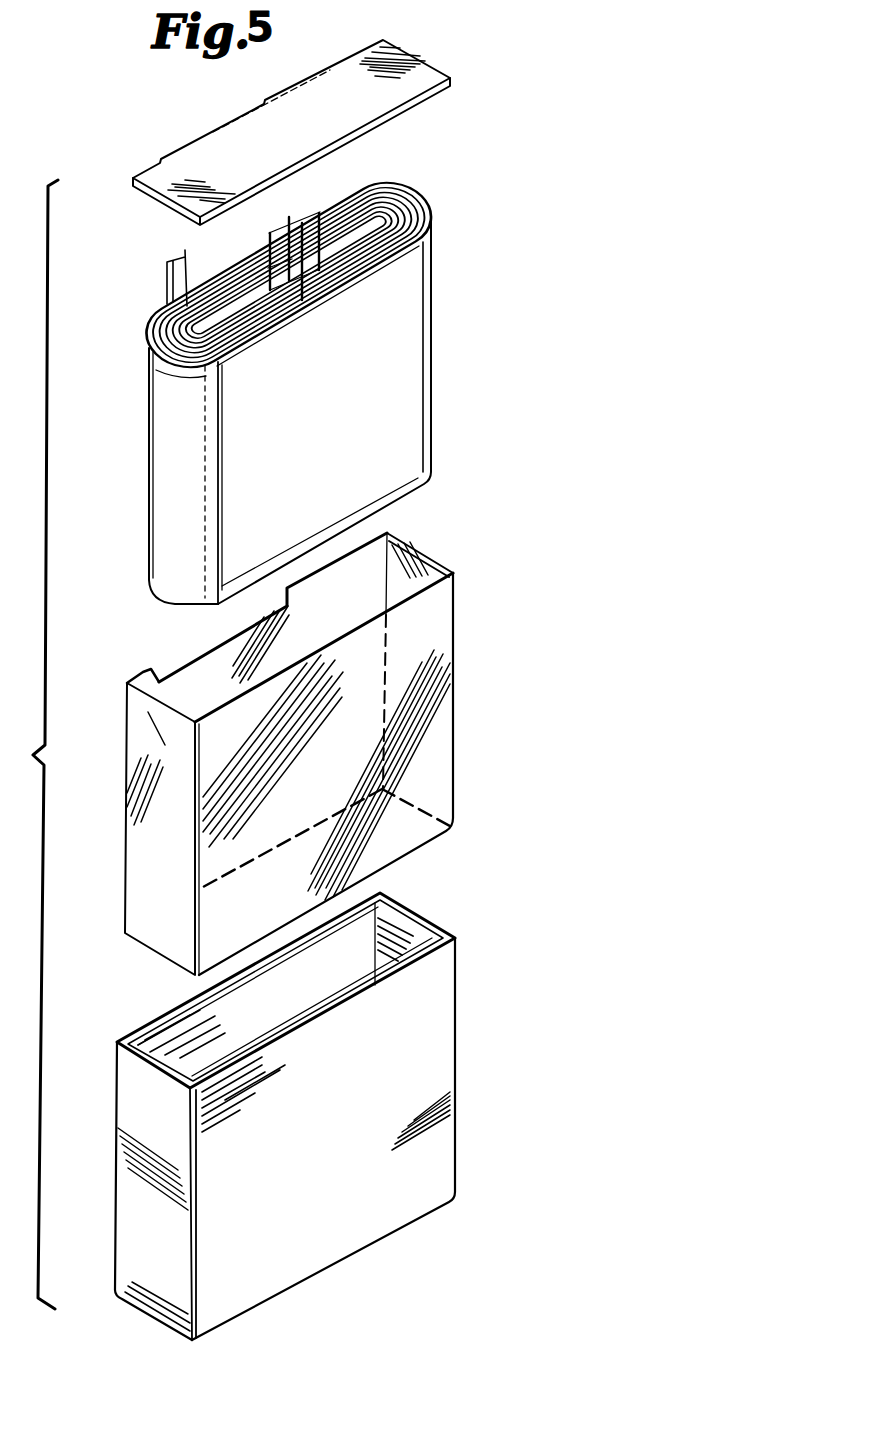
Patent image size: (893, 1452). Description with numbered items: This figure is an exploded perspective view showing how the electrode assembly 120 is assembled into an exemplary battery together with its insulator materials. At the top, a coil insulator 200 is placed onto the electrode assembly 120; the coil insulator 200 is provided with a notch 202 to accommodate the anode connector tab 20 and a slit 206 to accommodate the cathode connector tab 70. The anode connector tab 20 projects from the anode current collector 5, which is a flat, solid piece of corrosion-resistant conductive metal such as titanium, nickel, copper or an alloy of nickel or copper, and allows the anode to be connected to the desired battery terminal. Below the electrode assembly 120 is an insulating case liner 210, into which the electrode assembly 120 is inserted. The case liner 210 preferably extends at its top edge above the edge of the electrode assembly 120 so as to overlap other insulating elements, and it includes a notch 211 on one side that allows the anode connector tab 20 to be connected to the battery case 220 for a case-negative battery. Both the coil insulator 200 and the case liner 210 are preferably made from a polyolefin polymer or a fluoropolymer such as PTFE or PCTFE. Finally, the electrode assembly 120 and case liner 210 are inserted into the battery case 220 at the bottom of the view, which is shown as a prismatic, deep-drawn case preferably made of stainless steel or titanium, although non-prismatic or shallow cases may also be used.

The coil insulator 200 is at (291, 661).
The notch 202 is at (291, 112).
The slit 206 is at (377, 95).
The electrode assembly 120 is at (331, 387).
The anode current collector 5 is at (363, 434).
The anode connector tab 20 is at (186, 256).
The cathode connector tab 70 is at (276, 241).
The case liner 210 is at (321, 754).
The notch 211 is at (190, 666).
The battery case 220 is at (484, 1009).